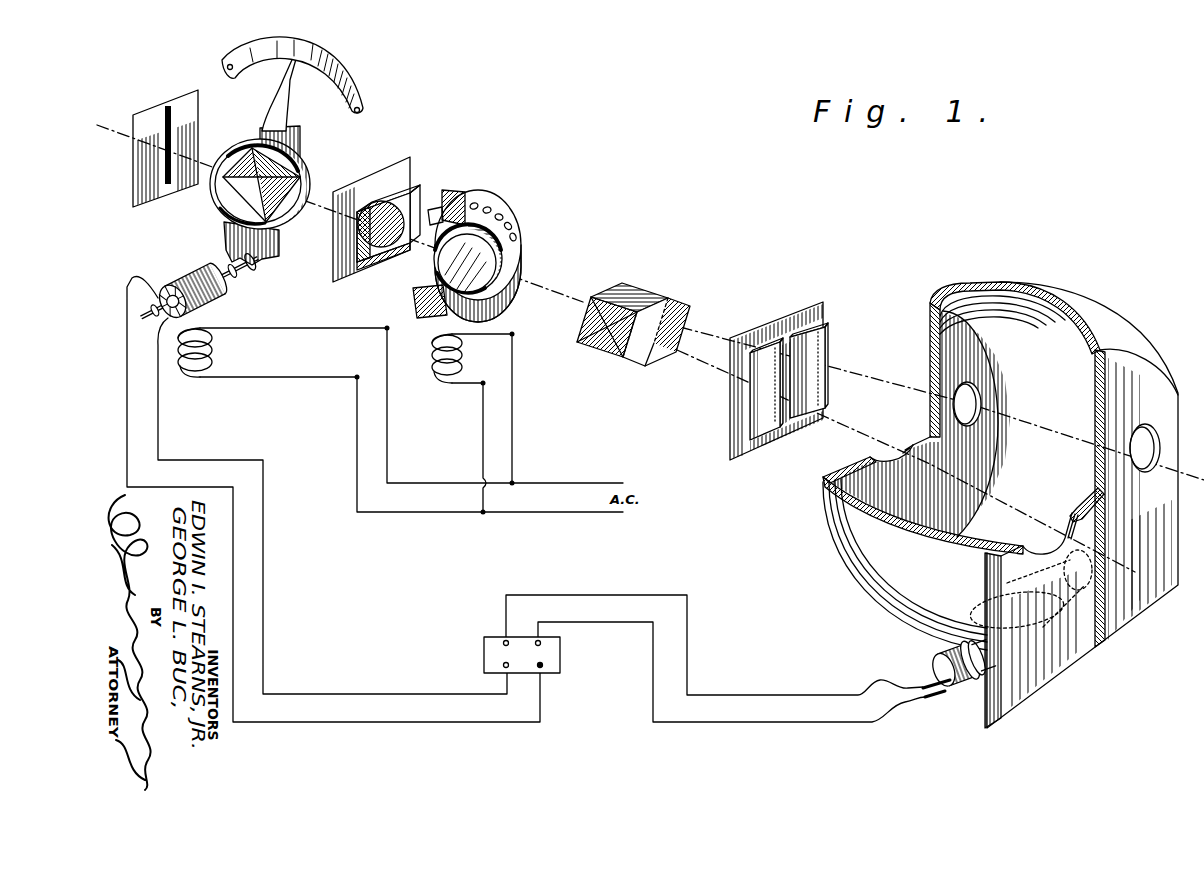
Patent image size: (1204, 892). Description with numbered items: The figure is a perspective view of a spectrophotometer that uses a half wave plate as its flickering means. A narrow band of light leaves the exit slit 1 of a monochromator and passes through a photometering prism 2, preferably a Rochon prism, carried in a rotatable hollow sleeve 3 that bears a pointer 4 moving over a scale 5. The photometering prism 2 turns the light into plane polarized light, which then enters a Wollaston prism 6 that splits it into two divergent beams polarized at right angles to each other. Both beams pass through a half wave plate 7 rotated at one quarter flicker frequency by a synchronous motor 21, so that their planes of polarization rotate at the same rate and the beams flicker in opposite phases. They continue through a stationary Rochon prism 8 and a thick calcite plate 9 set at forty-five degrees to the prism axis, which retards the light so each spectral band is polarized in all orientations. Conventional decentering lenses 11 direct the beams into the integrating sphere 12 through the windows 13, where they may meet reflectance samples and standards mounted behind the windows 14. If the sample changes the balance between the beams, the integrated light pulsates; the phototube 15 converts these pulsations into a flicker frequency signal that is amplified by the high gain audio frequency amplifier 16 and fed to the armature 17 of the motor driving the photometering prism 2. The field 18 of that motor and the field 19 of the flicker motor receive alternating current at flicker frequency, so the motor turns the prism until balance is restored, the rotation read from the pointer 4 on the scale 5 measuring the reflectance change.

The exit slit 1 is at (156, 98).
The photometering prism 2 is at (300, 168).
The rotatable hollow sleeve 3 is at (297, 140).
The pointer 4 is at (280, 93).
The scale 5 is at (355, 78).
The Wollaston prism 6 is at (413, 185).
The half wave plate 7 is at (478, 246).
The stationary Rochon prism 8 is at (625, 284).
The plate 9 is at (670, 312).
The decentering lenses 11 is at (823, 325).
The integrating sphere 12 is at (1037, 280).
The windows 13 is at (965, 400).
The windows 14 is at (1067, 540).
The phototube 15 is at (945, 657).
The high gain audio frequency amplifier 16 is at (487, 653).
The armature of photometering motor 17 is at (188, 275).
The field of photometering motor 18 is at (187, 377).
The field of flicker motor 19 is at (433, 362).
The synchronous motor 21 is at (495, 197).